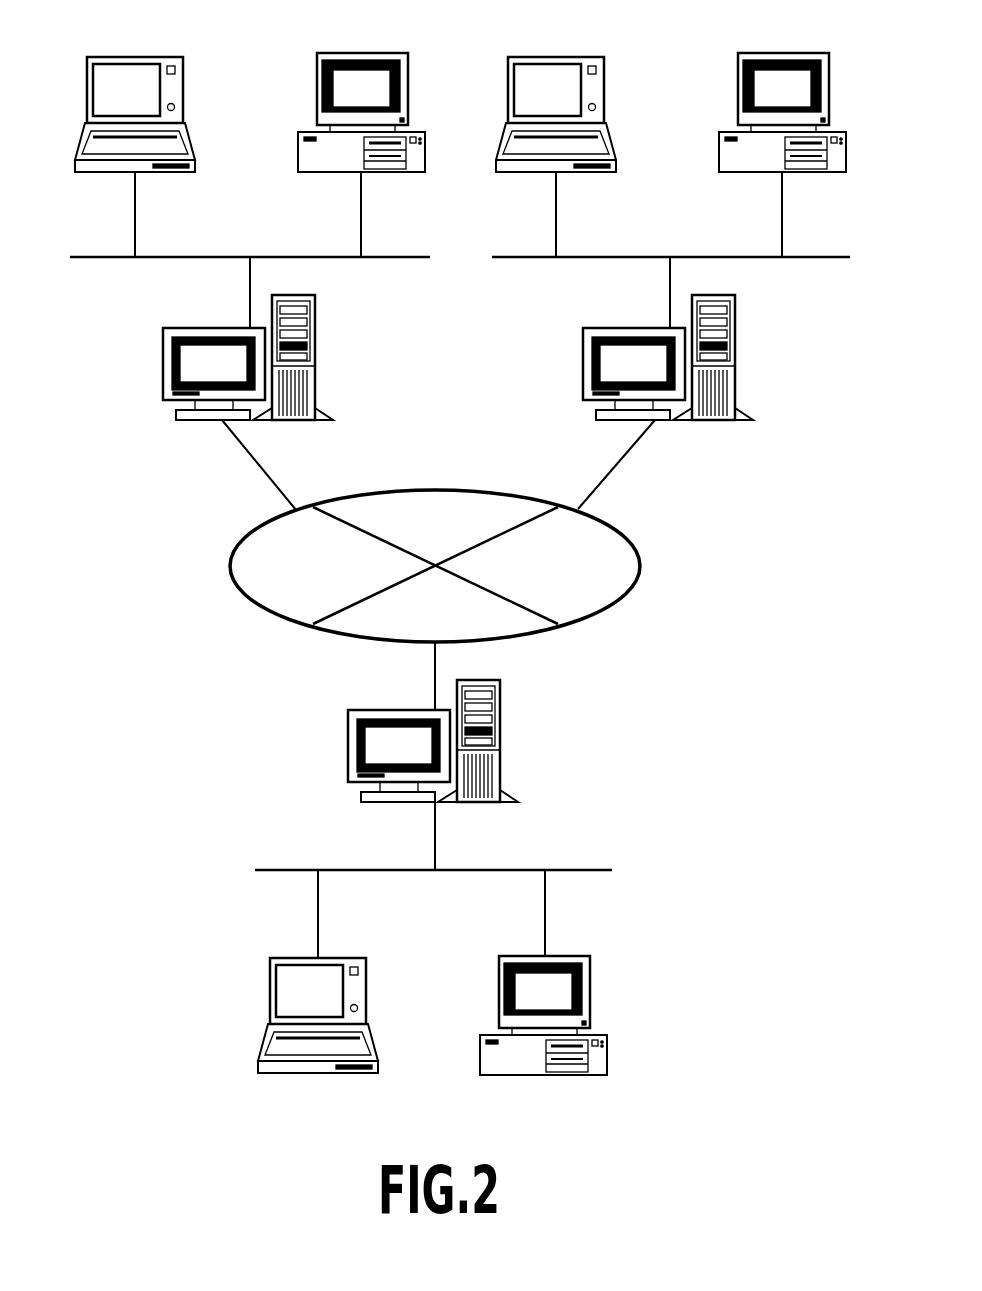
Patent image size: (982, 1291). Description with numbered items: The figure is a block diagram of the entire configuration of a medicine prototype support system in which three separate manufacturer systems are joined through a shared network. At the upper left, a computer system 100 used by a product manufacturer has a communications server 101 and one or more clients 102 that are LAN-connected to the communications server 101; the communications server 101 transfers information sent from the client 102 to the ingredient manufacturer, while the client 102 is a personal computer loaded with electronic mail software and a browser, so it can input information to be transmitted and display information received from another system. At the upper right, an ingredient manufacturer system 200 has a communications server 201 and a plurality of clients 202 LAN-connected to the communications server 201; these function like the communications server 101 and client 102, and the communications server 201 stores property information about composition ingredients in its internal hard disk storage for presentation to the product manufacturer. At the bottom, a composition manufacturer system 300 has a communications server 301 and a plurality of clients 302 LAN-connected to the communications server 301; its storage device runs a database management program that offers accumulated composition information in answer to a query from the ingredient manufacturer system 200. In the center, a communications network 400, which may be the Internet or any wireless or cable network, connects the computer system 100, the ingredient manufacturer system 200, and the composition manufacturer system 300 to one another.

The computer system 100 is at (118, 339).
The communications server 101 is at (316, 328).
The client 102 is at (172, 57).
The ingredient manufacturer system 200 is at (810, 340).
The communications server 201 is at (736, 328).
The clients 202 is at (592, 57).
The composition manufacturer system 300 is at (638, 833).
The communications server 301 is at (501, 710).
The clients 302 is at (355, 958).
The communications network 400 is at (631, 537).